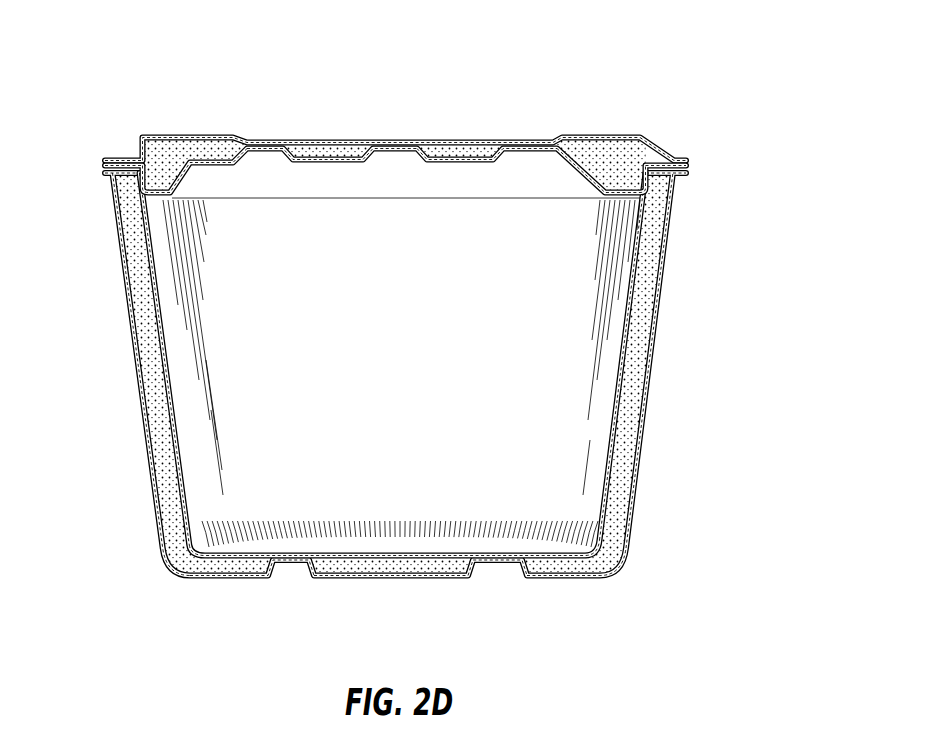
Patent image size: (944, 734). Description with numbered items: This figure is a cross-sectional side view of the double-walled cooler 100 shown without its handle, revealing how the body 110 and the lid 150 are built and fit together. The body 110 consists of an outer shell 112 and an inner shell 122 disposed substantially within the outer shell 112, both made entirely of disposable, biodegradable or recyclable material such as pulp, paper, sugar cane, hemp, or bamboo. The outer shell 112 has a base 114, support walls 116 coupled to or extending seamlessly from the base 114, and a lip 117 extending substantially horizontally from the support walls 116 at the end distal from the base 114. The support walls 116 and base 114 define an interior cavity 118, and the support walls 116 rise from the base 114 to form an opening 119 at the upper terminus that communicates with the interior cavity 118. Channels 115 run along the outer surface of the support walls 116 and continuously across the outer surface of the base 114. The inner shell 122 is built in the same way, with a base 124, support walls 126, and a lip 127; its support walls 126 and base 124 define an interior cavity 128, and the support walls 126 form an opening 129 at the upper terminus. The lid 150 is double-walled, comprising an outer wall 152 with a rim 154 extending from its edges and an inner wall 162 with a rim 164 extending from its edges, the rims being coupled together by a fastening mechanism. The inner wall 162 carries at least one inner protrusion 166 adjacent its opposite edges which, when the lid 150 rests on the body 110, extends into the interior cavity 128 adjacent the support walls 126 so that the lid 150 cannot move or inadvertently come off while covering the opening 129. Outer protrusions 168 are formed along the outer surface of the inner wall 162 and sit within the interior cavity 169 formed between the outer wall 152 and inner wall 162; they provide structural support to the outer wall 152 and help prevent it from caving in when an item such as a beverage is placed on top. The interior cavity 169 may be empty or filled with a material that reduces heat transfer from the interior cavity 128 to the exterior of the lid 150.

The double-walled cooler 100 is at (445, 344).
The body 110 is at (445, 414).
The outer shell 112 is at (647, 412).
The base 114 is at (384, 579).
The channels 115 is at (289, 564).
The support walls 116 is at (156, 482).
The lip 117 is at (689, 175).
The interior cavity 118 is at (150, 365).
The opening 119 is at (121, 184).
The inner shell 122 is at (604, 484).
The base 124 is at (398, 495).
The support walls 126 is at (619, 345).
The lip 127 is at (706, 146).
The interior cavity 128 is at (273, 405).
The opening 129 is at (193, 207).
The lid 150 is at (414, 162).
The outer wall 152 is at (594, 134).
The rim 154 is at (677, 159).
The inner wall 162 is at (481, 163).
The rim 164 is at (140, 160).
The inner protrusion 166 is at (628, 199).
The outer protrusion 168 is at (266, 153).
The interior cavity 169 is at (176, 148).